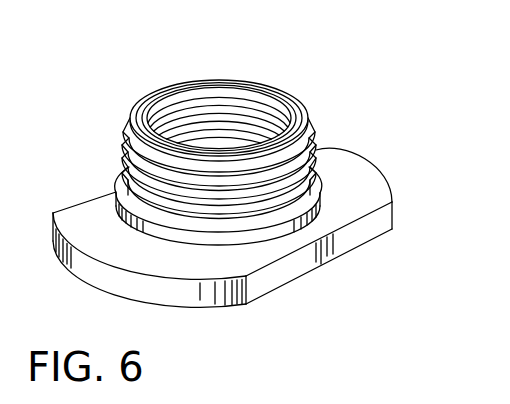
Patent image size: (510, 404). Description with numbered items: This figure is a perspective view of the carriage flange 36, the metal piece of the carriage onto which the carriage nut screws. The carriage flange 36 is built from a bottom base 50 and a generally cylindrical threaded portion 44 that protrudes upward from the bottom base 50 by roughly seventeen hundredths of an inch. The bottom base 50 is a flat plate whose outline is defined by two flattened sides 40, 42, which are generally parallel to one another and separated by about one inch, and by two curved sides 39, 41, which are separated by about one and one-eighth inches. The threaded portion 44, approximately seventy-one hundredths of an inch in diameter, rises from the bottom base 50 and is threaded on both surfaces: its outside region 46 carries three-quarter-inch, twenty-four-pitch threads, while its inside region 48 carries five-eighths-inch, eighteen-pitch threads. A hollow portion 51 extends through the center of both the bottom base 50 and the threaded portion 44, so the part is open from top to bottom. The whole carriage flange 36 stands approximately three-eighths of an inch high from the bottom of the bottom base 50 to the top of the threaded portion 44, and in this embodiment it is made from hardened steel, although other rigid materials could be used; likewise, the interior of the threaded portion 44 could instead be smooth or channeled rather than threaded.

The carriage flange 36 is at (178, 64).
The curved side 39 is at (100, 280).
The flattened side 40 is at (88, 200).
The curved side 41 is at (357, 148).
The flattened side 42 is at (273, 268).
The threaded portion 44 is at (160, 97).
The outside region 46 is at (128, 140).
The inside region 48 is at (247, 115).
The bottom base 50 is at (329, 153).
The hollow portion 51 is at (203, 104).